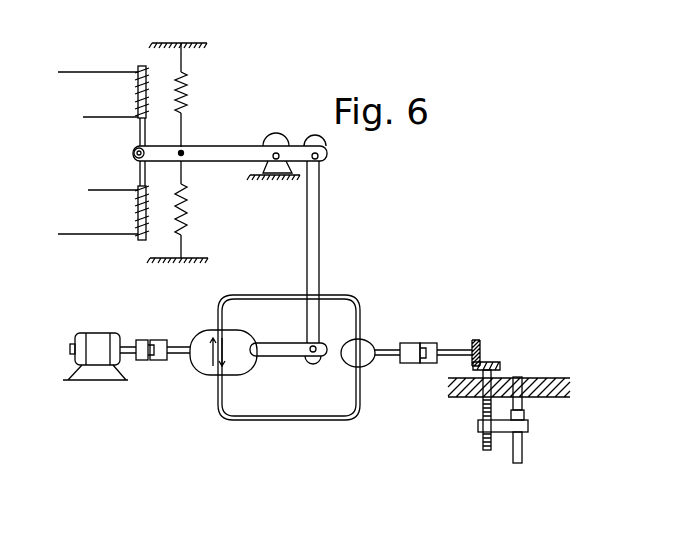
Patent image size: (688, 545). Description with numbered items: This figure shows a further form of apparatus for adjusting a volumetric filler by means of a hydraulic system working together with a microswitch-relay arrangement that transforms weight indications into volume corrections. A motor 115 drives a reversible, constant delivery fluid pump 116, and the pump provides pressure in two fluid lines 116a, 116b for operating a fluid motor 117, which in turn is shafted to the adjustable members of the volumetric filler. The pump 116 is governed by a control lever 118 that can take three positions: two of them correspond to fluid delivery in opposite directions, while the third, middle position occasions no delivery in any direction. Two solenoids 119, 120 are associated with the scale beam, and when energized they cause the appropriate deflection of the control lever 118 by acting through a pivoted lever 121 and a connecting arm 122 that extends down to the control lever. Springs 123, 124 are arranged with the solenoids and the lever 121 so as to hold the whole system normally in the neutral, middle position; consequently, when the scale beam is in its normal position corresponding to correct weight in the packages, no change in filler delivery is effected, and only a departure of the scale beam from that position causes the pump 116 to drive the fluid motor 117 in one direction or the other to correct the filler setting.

The motor 115 is at (104, 333).
The fluid pump 116 is at (206, 332).
The fluid line 116a is at (326, 297).
The fluid line 116b is at (316, 421).
The fluid motor 117 is at (367, 341).
The control lever 118 is at (269, 357).
The solenoid 119 is at (136, 89).
The solenoid 120 is at (135, 207).
The lever 121 is at (218, 147).
The arm 122 is at (319, 214).
The spring 123 is at (186, 88).
The lower return spring 124 is at (186, 210).